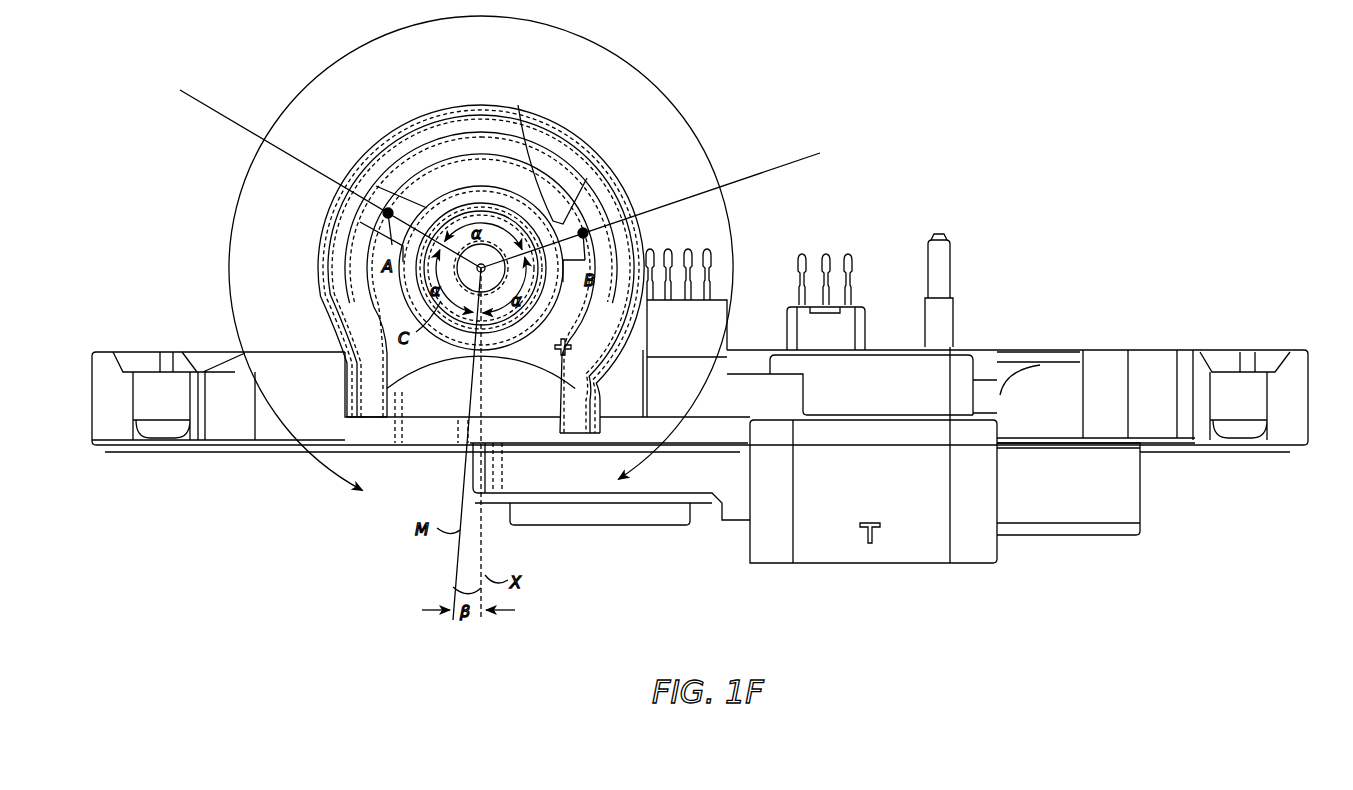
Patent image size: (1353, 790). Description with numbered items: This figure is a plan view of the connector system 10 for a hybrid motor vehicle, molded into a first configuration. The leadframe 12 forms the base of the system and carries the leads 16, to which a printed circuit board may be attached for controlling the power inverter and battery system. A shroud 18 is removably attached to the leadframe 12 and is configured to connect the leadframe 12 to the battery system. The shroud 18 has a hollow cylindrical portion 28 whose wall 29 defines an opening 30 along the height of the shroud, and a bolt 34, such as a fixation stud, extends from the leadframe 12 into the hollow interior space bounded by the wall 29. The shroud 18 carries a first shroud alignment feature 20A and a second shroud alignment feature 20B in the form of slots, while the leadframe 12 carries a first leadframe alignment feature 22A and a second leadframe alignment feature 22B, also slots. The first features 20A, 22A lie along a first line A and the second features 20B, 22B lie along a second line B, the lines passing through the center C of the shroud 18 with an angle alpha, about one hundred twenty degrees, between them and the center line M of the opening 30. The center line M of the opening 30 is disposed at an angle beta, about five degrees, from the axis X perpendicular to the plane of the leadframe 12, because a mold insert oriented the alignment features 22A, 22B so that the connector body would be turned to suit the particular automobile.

The connector system 10 is at (1218, 236).
The leadframe 12 is at (1160, 348).
The leads 16 is at (797, 275).
The shroud 18 is at (630, 170).
The first shroud alignment feature 20A is at (385, 182).
The second shroud alignment feature 20B is at (598, 240).
The first leadframe alignment feature 22A is at (384, 212).
The second leadframe alignment feature 22B is at (518, 105).
The hollow cylindrical portion 28 is at (326, 340).
The wall 29 is at (372, 150).
The opening 30 is at (500, 421).
The bolt 34 is at (493, 255).